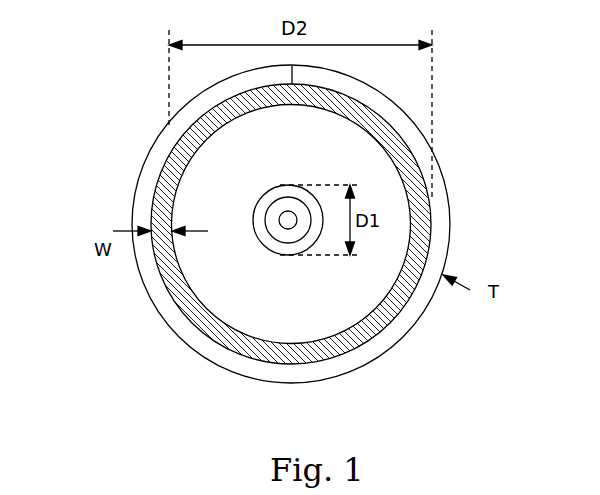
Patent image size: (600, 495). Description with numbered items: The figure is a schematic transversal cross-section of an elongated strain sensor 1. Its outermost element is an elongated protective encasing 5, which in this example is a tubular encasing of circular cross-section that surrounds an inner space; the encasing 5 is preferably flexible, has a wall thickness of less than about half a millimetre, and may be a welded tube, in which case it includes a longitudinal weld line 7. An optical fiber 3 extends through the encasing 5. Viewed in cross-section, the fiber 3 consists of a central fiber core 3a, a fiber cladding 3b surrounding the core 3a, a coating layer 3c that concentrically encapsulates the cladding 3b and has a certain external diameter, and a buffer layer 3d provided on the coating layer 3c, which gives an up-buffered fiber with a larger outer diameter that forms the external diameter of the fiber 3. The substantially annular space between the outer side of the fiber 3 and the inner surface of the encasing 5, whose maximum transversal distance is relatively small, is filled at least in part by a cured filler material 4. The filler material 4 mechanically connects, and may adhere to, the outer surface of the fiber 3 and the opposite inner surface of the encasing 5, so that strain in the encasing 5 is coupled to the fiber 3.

The sensor 1 is at (90, 352).
The optical fiber 3 is at (291, 258).
The fiber core 3a is at (287, 212).
The fiber cladding 3b is at (285, 233).
The coating layer 3c is at (288, 243).
The buffer layer 3d is at (300, 317).
The cured filler material 4 is at (395, 260).
The protective encasing 5 is at (355, 364).
The longitudinal weld line 7 is at (292, 83).